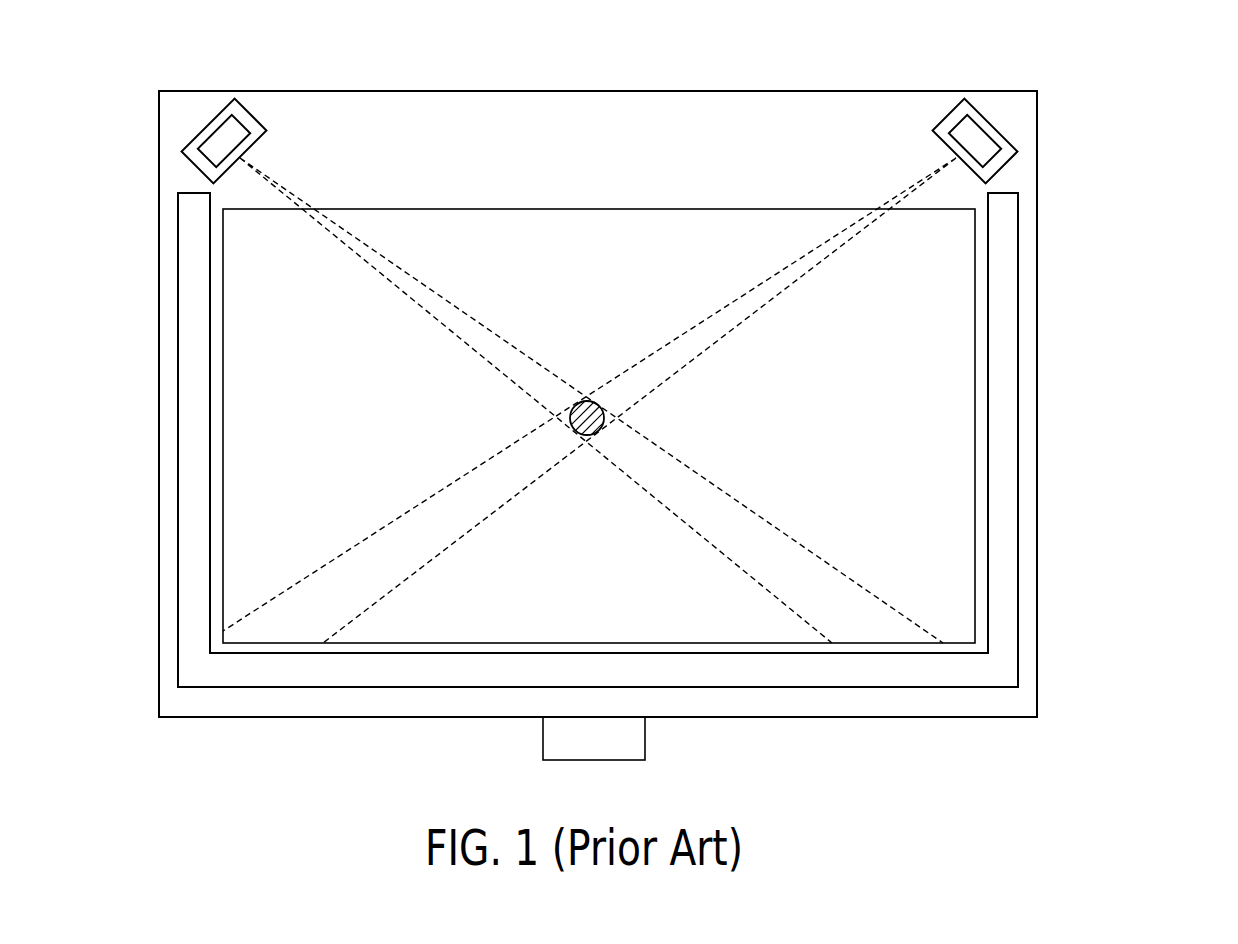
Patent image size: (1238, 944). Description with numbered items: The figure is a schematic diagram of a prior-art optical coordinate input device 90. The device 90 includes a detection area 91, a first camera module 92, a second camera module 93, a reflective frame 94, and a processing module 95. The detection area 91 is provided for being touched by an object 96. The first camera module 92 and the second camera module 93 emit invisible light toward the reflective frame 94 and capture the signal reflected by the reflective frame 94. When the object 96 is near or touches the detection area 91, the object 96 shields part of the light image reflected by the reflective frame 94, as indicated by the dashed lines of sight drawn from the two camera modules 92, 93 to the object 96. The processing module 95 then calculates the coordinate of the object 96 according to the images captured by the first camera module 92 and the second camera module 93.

The optical coordinate input device 90 is at (1148, 76).
The detection area 91 is at (562, 226).
The first camera module 92 is at (187, 147).
The second camera module 93 is at (987, 133).
The reflective frame 94 is at (1005, 538).
The processing module 95 is at (641, 737).
The object 96 is at (589, 436).